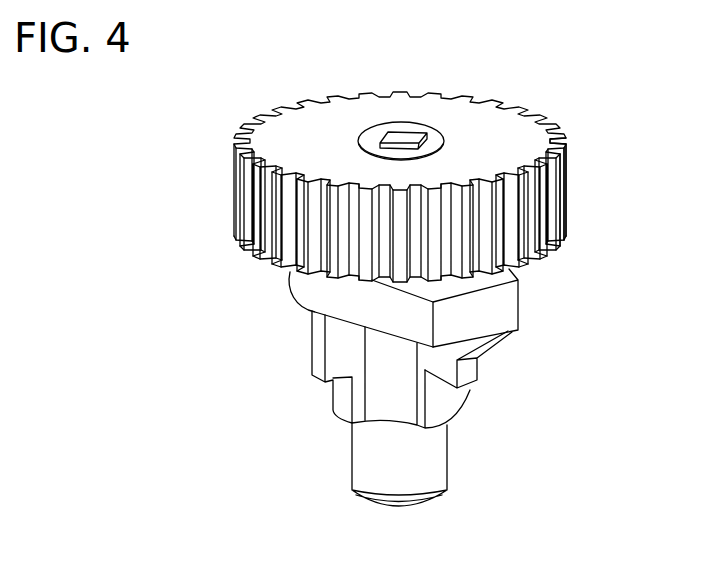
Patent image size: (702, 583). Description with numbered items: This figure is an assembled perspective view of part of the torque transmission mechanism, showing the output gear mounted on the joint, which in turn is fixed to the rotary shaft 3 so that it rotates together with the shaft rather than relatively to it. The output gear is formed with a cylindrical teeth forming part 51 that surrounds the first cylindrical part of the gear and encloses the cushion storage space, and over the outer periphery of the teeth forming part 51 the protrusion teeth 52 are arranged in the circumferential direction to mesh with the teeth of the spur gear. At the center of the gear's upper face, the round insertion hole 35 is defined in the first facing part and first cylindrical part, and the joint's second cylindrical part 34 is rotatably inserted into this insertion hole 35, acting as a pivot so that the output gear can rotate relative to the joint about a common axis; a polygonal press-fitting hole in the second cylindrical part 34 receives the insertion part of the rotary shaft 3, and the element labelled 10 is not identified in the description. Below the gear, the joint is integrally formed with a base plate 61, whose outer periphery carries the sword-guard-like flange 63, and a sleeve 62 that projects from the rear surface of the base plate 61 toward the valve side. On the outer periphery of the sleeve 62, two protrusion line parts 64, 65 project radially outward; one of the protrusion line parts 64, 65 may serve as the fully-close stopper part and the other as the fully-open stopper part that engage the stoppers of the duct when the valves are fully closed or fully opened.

The rotary shaft 3 is at (457, 82).
The detection target 10 is at (412, 133).
The second cylindrical part 34 is at (440, 138).
The insertion hole 35 is at (382, 123).
The teeth forming part 51 is at (530, 143).
The protrusion teeth 52 is at (560, 212).
The base plate 61 is at (320, 295).
The sleeve 62 is at (443, 457).
The flange 63 is at (510, 307).
The protrusion line part 64 is at (304, 368).
The protrusion line part 65 is at (472, 368).